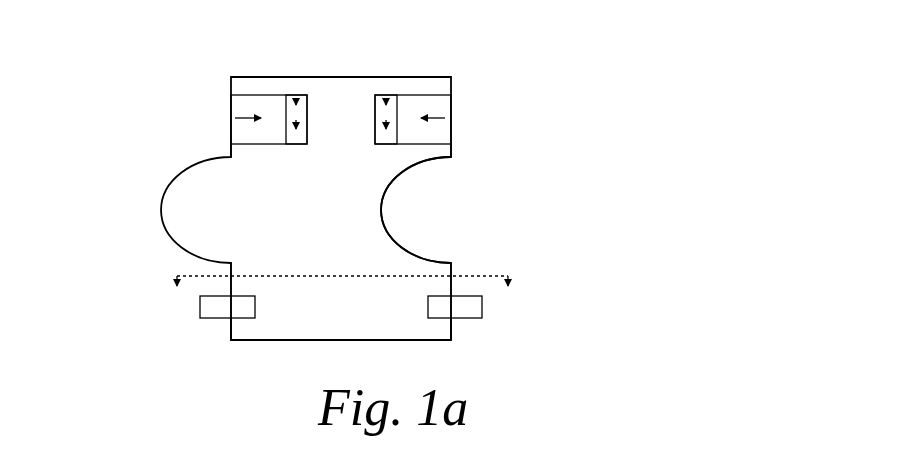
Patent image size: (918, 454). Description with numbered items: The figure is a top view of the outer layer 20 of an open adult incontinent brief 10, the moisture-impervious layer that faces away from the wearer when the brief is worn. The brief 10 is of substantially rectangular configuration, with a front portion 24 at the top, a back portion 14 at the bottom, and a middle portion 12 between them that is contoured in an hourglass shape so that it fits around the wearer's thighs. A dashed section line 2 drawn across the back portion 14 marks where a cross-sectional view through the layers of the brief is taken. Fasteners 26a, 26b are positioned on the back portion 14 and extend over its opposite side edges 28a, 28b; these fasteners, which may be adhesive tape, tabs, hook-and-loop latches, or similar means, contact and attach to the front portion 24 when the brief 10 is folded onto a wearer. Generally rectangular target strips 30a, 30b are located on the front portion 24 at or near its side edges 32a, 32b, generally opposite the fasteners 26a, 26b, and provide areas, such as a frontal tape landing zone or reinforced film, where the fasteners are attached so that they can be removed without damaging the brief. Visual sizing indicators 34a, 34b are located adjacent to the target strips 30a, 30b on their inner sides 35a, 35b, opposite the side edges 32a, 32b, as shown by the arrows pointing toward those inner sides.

The adult incontinent brief 10 is at (552, 75).
The middle portion 12 is at (385, 200).
The back portion 14 is at (292, 340).
The outer layer 20 is at (417, 333).
The front portion 24 is at (241, 77).
The section line 2- 2 is at (343, 294).
The fastener 26a is at (200, 312).
The fastener 26b is at (482, 315).
The side edge 28a is at (231, 337).
The side edge 28b is at (451, 338).
The target strip 30a is at (231, 97).
The target strip 30b is at (451, 97).
The side edge 32a is at (231, 150).
The side edge 32b is at (451, 150).
The visual sizing indicator 34a is at (290, 95).
The visual sizing indicator 34b is at (383, 95).
The inner side 35a is at (235, 118).
The inner side 35b is at (445, 118).